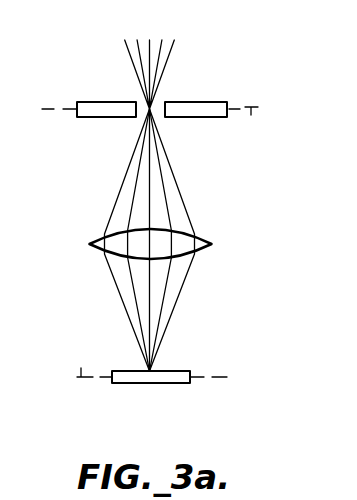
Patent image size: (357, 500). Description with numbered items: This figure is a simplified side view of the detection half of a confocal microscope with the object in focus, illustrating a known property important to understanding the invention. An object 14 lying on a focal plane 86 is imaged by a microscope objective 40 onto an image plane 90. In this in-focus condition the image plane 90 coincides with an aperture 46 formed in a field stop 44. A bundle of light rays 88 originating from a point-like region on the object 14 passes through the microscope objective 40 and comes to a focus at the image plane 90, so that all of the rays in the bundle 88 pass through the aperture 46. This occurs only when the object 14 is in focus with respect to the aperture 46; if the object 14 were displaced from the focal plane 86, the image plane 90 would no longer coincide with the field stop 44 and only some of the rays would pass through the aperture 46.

The object 14 is at (175, 383).
The microscope objective 40 is at (90, 243).
The field stop 44 is at (105, 101).
The aperture 46 is at (158, 95).
The focal plane 86 is at (80, 369).
The bundle of light rays 88 is at (179, 310).
The image plane 90 is at (253, 115).